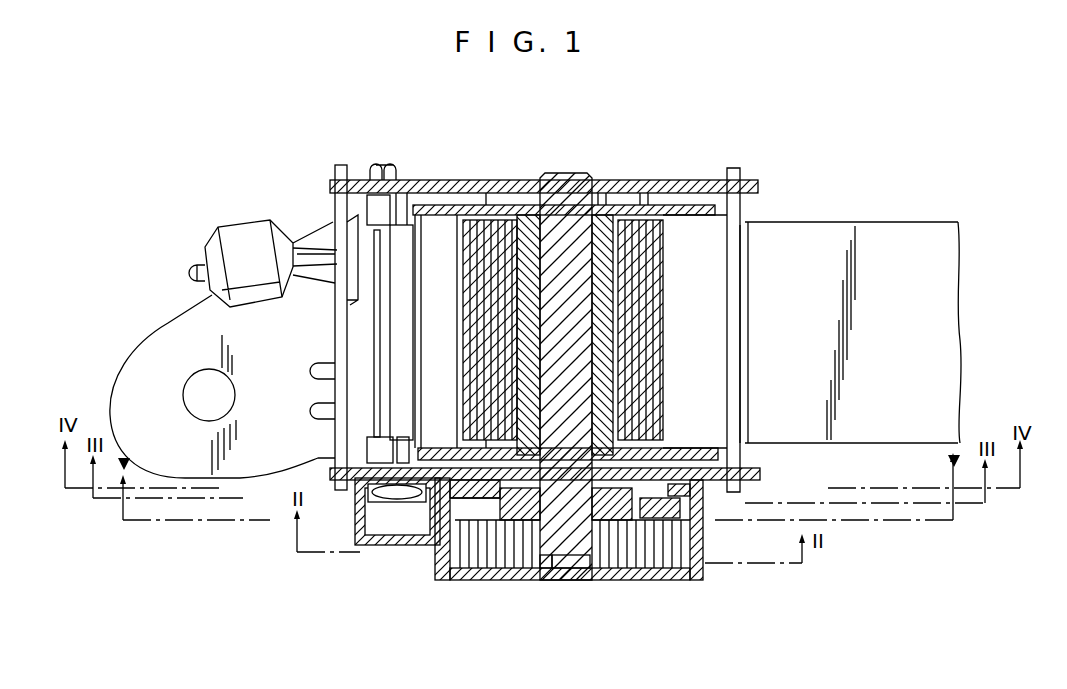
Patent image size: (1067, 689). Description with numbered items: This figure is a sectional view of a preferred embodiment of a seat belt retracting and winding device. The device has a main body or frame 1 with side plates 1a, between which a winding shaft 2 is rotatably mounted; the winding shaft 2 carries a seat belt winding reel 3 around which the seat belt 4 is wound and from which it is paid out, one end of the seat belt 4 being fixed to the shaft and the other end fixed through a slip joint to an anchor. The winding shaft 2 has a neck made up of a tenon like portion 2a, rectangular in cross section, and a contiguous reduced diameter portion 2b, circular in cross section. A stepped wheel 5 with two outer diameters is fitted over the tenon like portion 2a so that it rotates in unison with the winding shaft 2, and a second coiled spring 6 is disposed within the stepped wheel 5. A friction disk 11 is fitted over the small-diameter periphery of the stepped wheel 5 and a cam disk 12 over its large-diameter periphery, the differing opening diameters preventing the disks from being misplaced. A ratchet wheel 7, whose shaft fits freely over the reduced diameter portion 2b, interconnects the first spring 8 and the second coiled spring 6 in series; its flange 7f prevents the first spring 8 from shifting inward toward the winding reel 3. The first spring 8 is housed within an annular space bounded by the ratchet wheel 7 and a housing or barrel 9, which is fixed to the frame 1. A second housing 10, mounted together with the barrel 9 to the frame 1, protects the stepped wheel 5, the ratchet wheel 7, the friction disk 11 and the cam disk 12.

The frame 1 is at (183, 325).
The side plates 1a is at (358, 180).
The winding shaft 2 is at (568, 175).
The tenon like portion 2a is at (533, 560).
The reduced diameter portion 2b is at (565, 563).
The seat belt winding reel 3 is at (652, 172).
The seat belt 4 is at (846, 228).
The stepped wheel 5 is at (582, 560).
The second coiled spring 6 is at (525, 552).
The ratchet wheel 7 is at (460, 575).
The flange 7f is at (690, 500).
The first spring 8 is at (661, 562).
The housing or barrel 9 is at (697, 575).
The second housing 10 is at (690, 516).
The friction disk 11 is at (455, 490).
The cam disk 12 is at (468, 493).